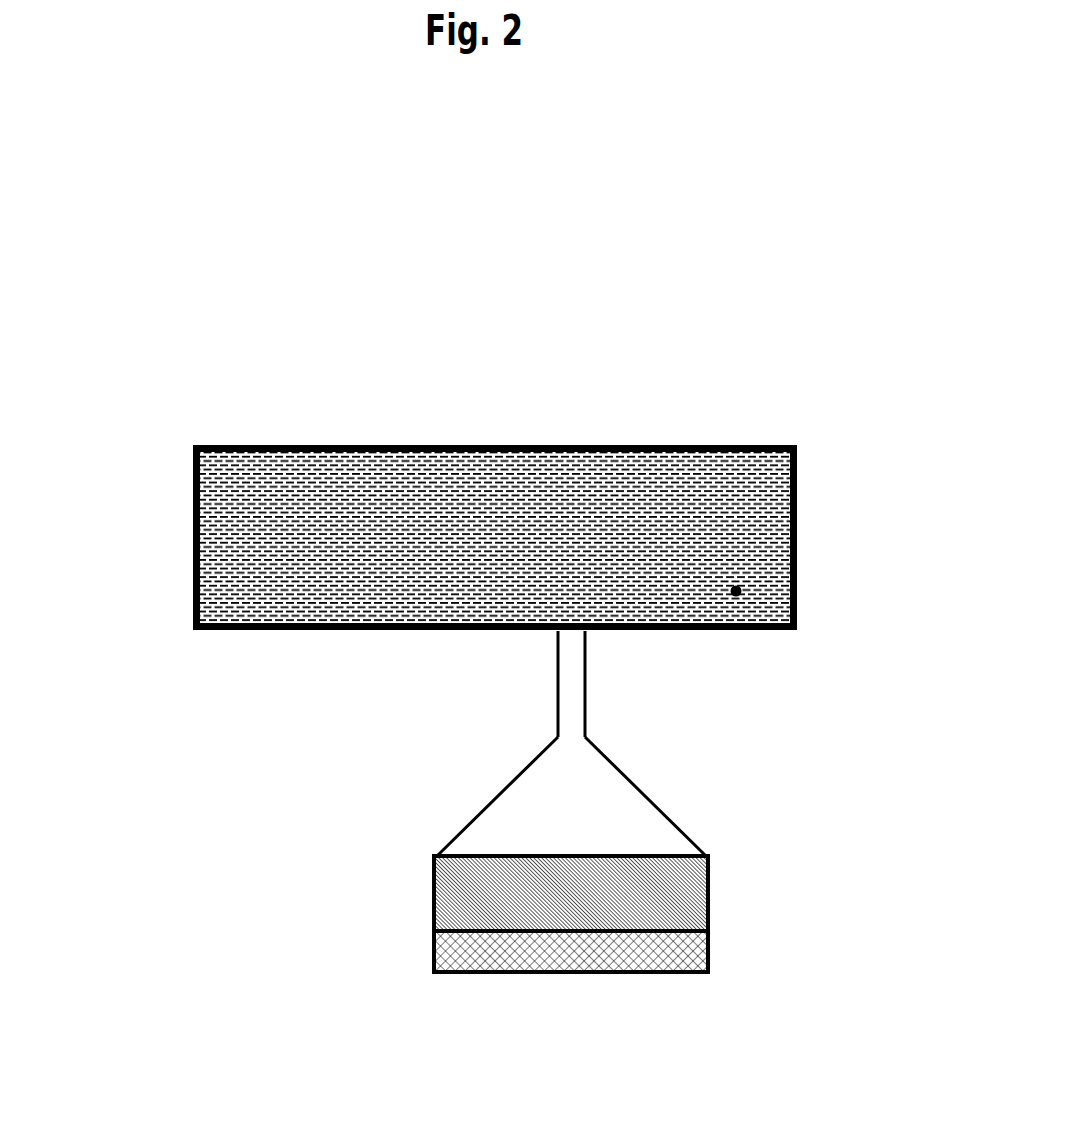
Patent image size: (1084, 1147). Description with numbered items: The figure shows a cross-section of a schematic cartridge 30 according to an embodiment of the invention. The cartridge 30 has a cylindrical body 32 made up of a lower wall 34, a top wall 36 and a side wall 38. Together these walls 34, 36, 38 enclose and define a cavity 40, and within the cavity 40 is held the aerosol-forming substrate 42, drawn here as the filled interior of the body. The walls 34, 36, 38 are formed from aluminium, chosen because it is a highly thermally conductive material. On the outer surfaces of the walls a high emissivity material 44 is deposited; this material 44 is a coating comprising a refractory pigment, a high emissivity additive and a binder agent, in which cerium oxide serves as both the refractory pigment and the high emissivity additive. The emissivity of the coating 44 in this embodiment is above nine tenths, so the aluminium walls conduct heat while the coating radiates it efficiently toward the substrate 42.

The cartridge 30 is at (653, 302).
The cylindrical body 32 is at (195, 447).
The lower wall 34 is at (308, 633).
The top wall 36 is at (413, 445).
The side wall 38 is at (195, 503).
The cavity 40 is at (647, 502).
The aerosol-forming substrate 42 is at (742, 590).
The high emissivity material 44 is at (710, 967).